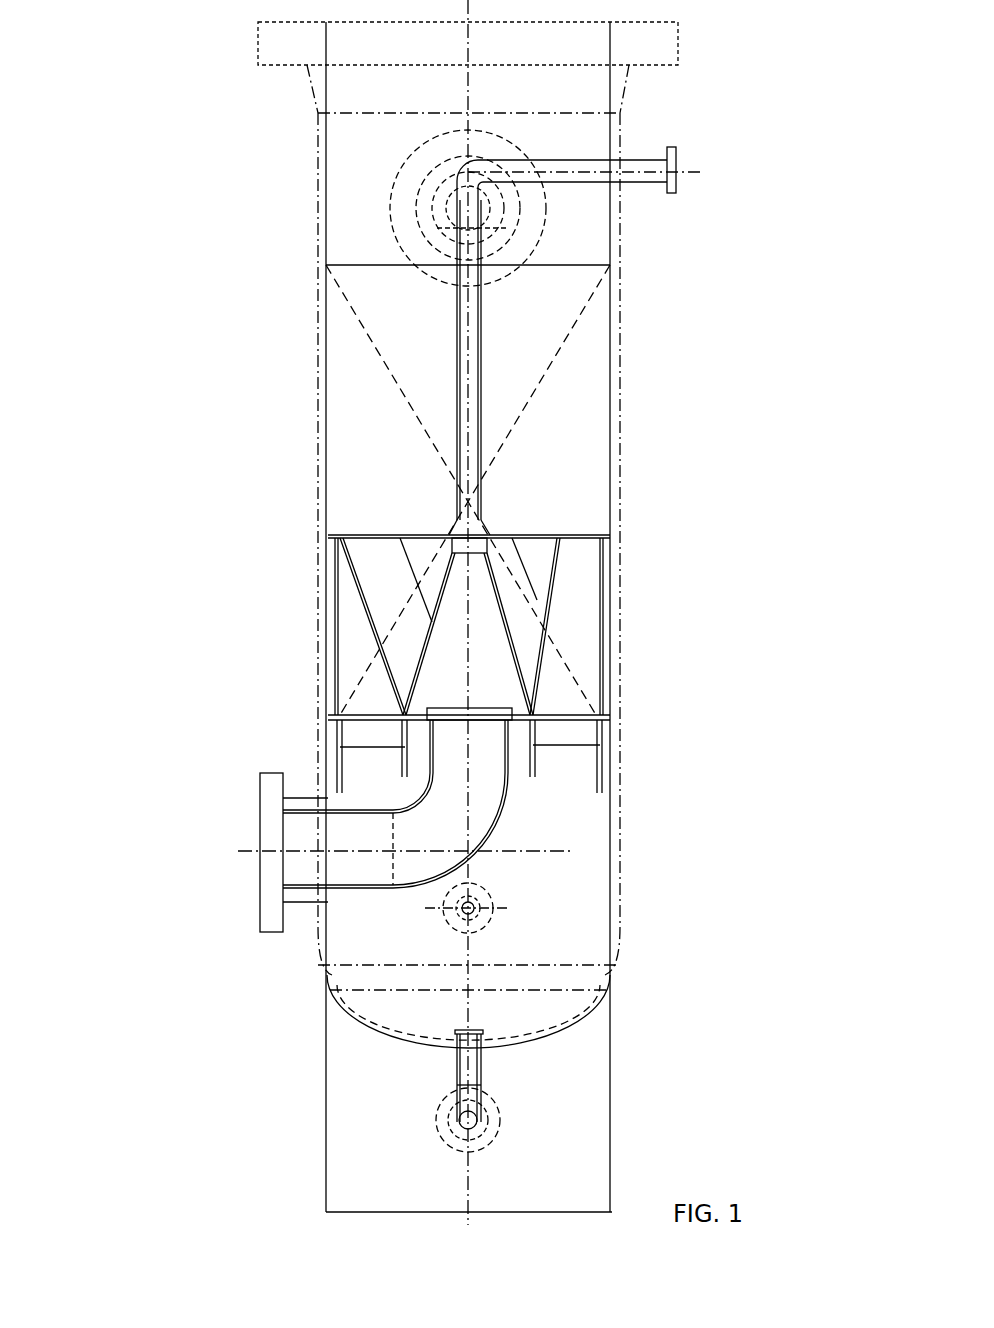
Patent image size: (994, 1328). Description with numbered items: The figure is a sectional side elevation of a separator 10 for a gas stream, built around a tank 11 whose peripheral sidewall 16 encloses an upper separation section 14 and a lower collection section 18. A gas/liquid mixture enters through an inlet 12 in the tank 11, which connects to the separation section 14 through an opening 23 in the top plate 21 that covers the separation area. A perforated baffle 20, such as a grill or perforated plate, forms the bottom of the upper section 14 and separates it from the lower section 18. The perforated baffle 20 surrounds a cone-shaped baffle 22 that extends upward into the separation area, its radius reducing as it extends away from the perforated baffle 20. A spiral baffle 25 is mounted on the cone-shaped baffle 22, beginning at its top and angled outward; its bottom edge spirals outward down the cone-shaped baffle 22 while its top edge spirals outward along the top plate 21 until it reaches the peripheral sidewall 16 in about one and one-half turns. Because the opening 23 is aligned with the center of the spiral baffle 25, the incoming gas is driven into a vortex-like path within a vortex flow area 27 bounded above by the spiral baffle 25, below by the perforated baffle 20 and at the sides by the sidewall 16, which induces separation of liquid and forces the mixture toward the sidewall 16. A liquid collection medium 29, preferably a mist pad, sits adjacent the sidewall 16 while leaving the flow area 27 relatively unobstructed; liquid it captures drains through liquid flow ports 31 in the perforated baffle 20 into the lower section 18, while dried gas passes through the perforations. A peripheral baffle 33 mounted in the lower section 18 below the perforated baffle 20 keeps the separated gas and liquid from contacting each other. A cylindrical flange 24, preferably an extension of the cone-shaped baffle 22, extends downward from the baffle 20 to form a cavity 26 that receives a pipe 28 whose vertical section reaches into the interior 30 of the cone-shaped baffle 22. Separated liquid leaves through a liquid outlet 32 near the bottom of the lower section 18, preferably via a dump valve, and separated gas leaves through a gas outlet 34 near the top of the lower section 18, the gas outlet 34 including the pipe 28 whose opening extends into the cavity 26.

The separator 10 is at (105, 94).
The tank 11 is at (622, 368).
The inlet 12 is at (677, 172).
The upper separation section 14 is at (345, 413).
The peripheral sidewall 16 is at (318, 503).
The lower collection section 18 is at (583, 938).
The perforated baffle 20 is at (547, 715).
The top plate 21 is at (588, 536).
The cone-shaped baffle 22 is at (507, 623).
The opening 23 is at (482, 513).
The cylindrical flange 24 is at (600, 745).
The spiral baffle 25 is at (530, 637).
The cavity 26 is at (413, 747).
The vortex flow area 27 is at (352, 648).
The pipe 28 is at (508, 773).
The liquid collection medium 29 is at (337, 683).
The interior 30 is at (443, 627).
The liquid flow ports 31 is at (337, 714).
The liquid outlet 32 is at (455, 1110).
The peripheral baffle 33 is at (600, 775).
The gas outlet 34 is at (267, 865).